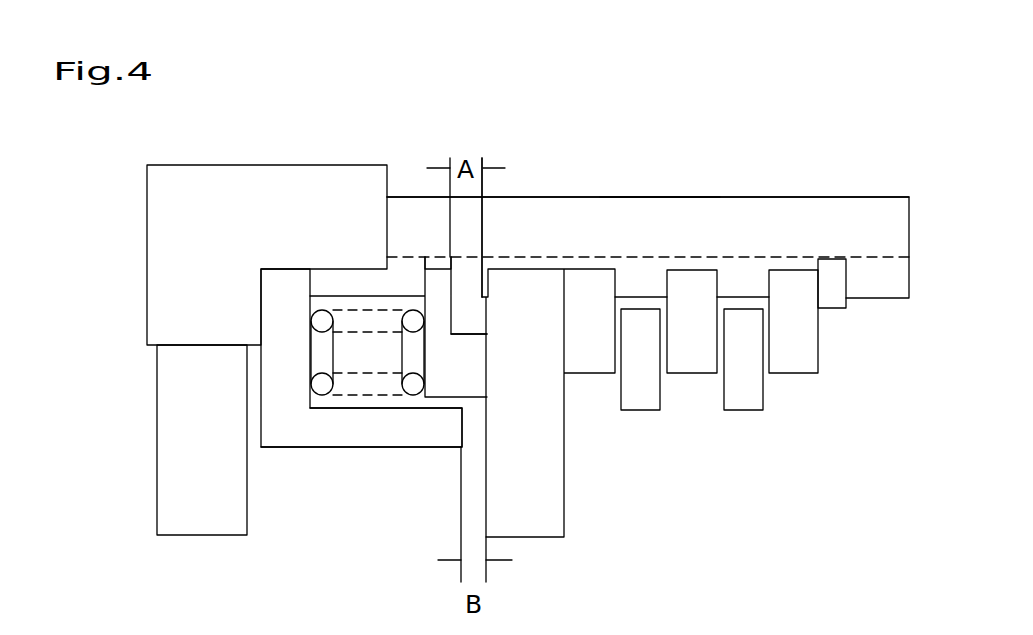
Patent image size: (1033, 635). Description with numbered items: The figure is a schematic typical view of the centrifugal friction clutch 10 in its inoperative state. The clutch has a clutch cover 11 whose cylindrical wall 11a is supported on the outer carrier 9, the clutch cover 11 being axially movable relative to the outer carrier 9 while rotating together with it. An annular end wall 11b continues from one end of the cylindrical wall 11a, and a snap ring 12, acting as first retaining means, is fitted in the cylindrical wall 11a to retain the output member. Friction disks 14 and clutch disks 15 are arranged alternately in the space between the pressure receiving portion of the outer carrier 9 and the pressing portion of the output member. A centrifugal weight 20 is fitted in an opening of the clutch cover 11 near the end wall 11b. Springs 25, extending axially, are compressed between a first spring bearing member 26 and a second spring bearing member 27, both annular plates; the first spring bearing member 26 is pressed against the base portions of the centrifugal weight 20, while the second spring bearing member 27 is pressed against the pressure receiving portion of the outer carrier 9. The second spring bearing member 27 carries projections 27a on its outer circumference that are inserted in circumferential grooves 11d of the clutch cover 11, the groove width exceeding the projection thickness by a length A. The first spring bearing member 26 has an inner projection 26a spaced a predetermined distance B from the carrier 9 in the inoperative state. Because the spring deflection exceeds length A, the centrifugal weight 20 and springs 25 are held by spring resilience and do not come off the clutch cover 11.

The outer carrier 9 is at (564, 505).
The centrifugal friction clutch 10 is at (484, 132).
The clutch cover 11 is at (565, 192).
The cylindrical wall 11a is at (650, 197).
The annular end wall 11b is at (157, 458).
The circumferential groove 11d is at (468, 295).
The snap ring 12 is at (836, 309).
The friction disks 14 is at (645, 411).
The clutch disks 15 is at (783, 278).
The centrifugal weight 20 is at (225, 165).
The spring 25 is at (362, 398).
The first spring bearing member 26 is at (298, 448).
The projection 26a is at (394, 448).
The second spring bearing member 27 is at (445, 400).
The projections 27a is at (428, 262).